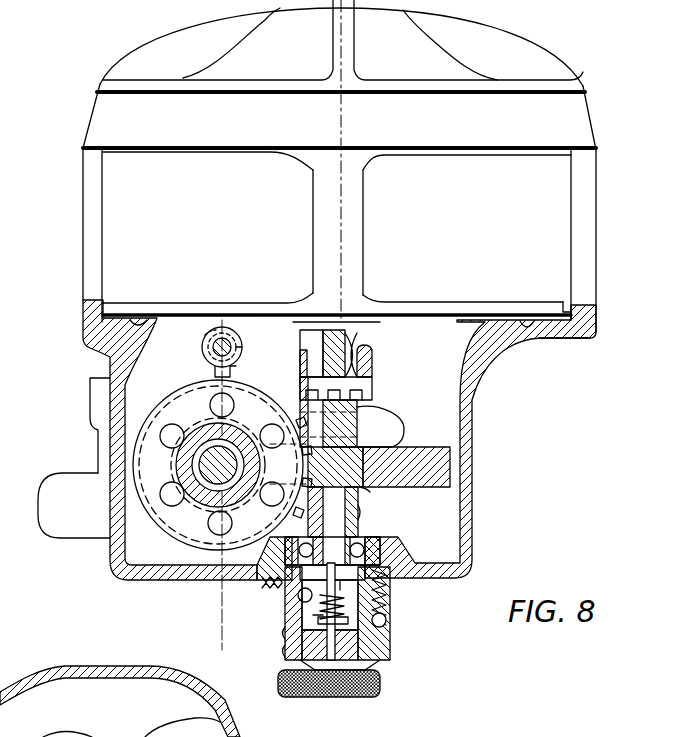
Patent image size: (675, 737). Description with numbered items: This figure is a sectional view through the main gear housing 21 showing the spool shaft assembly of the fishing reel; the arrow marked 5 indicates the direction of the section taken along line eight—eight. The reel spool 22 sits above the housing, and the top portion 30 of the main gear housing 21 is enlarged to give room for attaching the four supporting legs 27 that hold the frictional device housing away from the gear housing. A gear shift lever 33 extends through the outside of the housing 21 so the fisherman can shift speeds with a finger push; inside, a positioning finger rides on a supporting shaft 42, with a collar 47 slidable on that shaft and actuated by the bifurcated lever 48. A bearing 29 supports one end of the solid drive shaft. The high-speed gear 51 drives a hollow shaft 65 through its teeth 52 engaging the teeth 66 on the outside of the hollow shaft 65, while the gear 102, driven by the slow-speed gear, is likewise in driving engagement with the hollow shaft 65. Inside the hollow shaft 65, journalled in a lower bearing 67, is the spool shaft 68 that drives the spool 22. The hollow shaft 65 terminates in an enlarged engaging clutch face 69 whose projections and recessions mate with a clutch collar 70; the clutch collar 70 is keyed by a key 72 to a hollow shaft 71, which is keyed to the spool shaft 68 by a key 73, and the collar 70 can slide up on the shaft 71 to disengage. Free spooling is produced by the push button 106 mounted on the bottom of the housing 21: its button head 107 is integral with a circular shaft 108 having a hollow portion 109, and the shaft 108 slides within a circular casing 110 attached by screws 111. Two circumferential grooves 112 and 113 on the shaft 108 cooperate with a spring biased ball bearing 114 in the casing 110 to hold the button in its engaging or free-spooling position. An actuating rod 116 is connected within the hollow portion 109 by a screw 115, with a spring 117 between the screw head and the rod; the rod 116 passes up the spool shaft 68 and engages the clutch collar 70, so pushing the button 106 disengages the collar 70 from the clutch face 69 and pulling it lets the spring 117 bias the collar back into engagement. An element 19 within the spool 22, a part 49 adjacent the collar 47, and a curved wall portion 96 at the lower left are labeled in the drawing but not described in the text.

The bearing 29 is at (522, 38).
The legs 27 is at (82, 222).
The reel spool 22 is at (180, 303).
The central rib 19 is at (364, 222).
The main gear housing 21 is at (470, 456).
The top portion of the main gear housing 30 is at (548, 330).
The gear shift lever 33 is at (47, 493).
The supporting shaft 42 is at (228, 340).
The collar 47 is at (208, 327).
The bearing race 49 is at (242, 347).
The bifurcated lever 48 is at (236, 365).
The high-speed gear 51 is at (168, 516).
The teeth of the high-speed gear 52 is at (175, 538).
The key 72 is at (305, 338).
The key 73 is at (353, 332).
The hollow shaft 71 is at (352, 342).
The clutch collar 70 is at (372, 360).
The engaging clutch face 69 is at (365, 398).
The gear 102 is at (437, 441).
The hollow shaft 65 is at (345, 508).
The teeth 66 is at (370, 492).
The spool shaft 68 is at (360, 515).
The lower bearing 67 is at (376, 540).
The actuating rod 116 is at (328, 571).
The screw 115 is at (348, 577).
The spring 117 is at (345, 601).
The hollow portion 109 is at (292, 600).
The screws 111 is at (265, 582).
The circumferential groove 112 is at (288, 630).
The circumferential groove 113 is at (295, 650).
The circular casing 110 is at (390, 626).
The spring biased ball bearing 114 is at (388, 634).
The circular shaft 108 is at (357, 657).
The button head 107 is at (380, 683).
The push button 106 is at (390, 719).
The section line 5 is at (222, 640).
The cover wall 96 is at (152, 735).